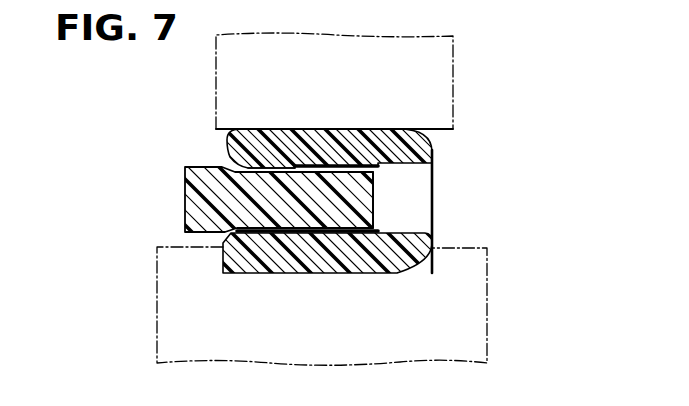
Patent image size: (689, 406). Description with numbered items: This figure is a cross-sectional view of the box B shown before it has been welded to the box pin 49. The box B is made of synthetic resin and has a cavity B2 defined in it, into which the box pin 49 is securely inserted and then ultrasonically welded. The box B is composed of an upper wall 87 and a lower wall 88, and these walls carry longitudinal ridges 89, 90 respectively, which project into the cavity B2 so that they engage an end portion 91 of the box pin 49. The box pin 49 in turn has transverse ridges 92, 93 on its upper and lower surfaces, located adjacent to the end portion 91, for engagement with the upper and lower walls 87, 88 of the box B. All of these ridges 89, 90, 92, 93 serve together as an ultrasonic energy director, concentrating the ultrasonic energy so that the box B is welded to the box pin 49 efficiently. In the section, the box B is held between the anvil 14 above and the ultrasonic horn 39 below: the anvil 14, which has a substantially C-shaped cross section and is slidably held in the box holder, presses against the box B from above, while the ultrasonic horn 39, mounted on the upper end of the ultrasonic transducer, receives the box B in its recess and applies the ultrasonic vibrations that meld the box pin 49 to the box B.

The anvil 14 is at (440, 68).
The ultrasonic horn 39 is at (468, 328).
The box pin 49 is at (198, 203).
The upper wall 87 is at (317, 140).
The lower wall 88 is at (344, 262).
The longitudinal ridge 89 is at (376, 172).
The longitudinal ridge 90 is at (367, 216).
The end portion 91 is at (362, 202).
The transverse ridge 92 is at (249, 167).
The transverse ridge 93 is at (251, 234).
The box B is at (445, 138).
The cavity B2 is at (418, 223).